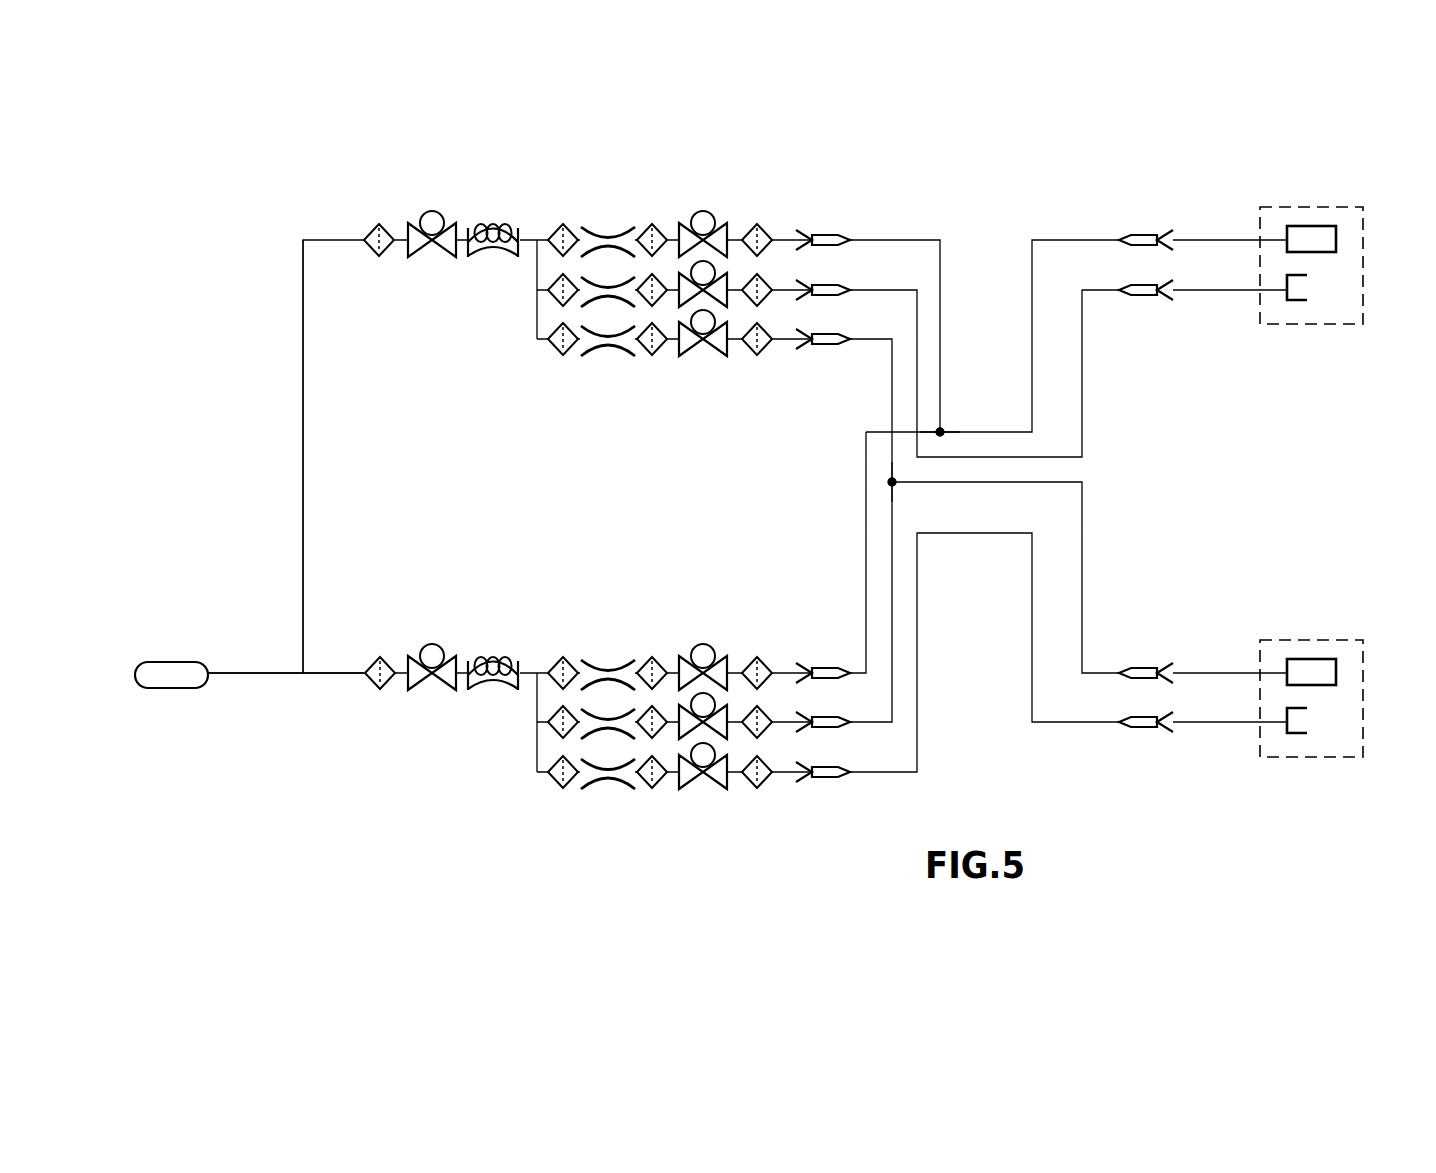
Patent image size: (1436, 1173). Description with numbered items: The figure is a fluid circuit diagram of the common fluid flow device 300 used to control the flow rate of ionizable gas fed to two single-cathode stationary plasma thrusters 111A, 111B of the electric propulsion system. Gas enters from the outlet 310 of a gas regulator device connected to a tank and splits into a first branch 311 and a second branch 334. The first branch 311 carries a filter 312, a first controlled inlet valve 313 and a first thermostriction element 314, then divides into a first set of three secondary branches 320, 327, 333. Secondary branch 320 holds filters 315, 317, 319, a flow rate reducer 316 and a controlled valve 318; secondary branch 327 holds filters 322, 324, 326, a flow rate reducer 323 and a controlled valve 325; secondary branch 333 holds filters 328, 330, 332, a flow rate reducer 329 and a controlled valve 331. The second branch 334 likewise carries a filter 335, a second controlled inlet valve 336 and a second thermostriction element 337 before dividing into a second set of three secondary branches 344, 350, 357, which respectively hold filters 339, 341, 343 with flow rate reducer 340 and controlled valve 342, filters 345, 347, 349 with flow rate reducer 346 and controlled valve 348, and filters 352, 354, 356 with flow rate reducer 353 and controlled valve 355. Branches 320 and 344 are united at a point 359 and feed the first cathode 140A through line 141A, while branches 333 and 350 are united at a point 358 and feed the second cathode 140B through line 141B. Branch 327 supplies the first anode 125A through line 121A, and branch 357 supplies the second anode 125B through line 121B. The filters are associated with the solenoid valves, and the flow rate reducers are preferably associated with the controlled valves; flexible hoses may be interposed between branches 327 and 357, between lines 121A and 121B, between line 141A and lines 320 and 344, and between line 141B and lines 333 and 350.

The common fluid flow device 300 is at (285, 398).
The outlet of gas regulator device 310 is at (163, 665).
The first branch 311 is at (303, 445).
The second branch 334 is at (318, 678).
The filter 312 is at (371, 230).
The first controlled inlet valve 313 is at (428, 212).
The first thermostriction element 314 is at (493, 223).
The filter 315 is at (556, 228).
The flow rate reducer 316 is at (604, 232).
The filter 317 is at (641, 230).
The controlled valve 318 is at (700, 218).
The filter 319 is at (752, 228).
The secondary branch 320 is at (796, 230).
The filter 322 is at (548, 293).
The flow rate reducer 323 is at (610, 285).
The filter 324 is at (658, 298).
The controlled valve 325 is at (717, 294).
The filter 326 is at (766, 296).
The secondary branch 327 is at (793, 282).
The filter 328 is at (552, 353).
The flow rate reducer 329 is at (606, 352).
The filter 330 is at (645, 355).
The controlled valve 331 is at (700, 357).
The filter 332 is at (752, 353).
The secondary branch 333 is at (795, 350).
The filter 335 is at (371, 663).
The second controlled inlet valve 336 is at (430, 645).
The second thermostriction element 337 is at (493, 656).
The filter 339 is at (556, 661).
The flow rate reducer 340 is at (604, 665).
The filter 341 is at (641, 663).
The controlled valve 342 is at (700, 651).
The filter 343 is at (752, 661).
The secondary branch 344 is at (796, 663).
The filter 345 is at (548, 726).
The flow rate reducer 346 is at (610, 718).
The filter 347 is at (658, 731).
The controlled valve 348 is at (717, 727).
The filter 349 is at (766, 729).
The secondary branch 350 is at (793, 715).
The filter 352 is at (552, 789).
The flow rate reducer 353 is at (606, 786).
The filter 354 is at (645, 789).
The controlled valve 355 is at (700, 791).
The filter 356 is at (755, 789).
The secondary branch 357 is at (790, 780).
The point 358 is at (892, 482).
The point 359 is at (940, 432).
The line 141A is at (1200, 238).
The line 121A is at (1196, 292).
The first cathode 140A is at (1305, 228).
The first anode 125A is at (1302, 300).
The stationary plasma thruster 111A is at (1363, 268).
The line 141B is at (1200, 671).
The line 121B is at (1196, 725).
The second cathode 140B is at (1305, 661).
The second anode 125B is at (1302, 733).
The stationary plasma thruster 111B is at (1363, 701).